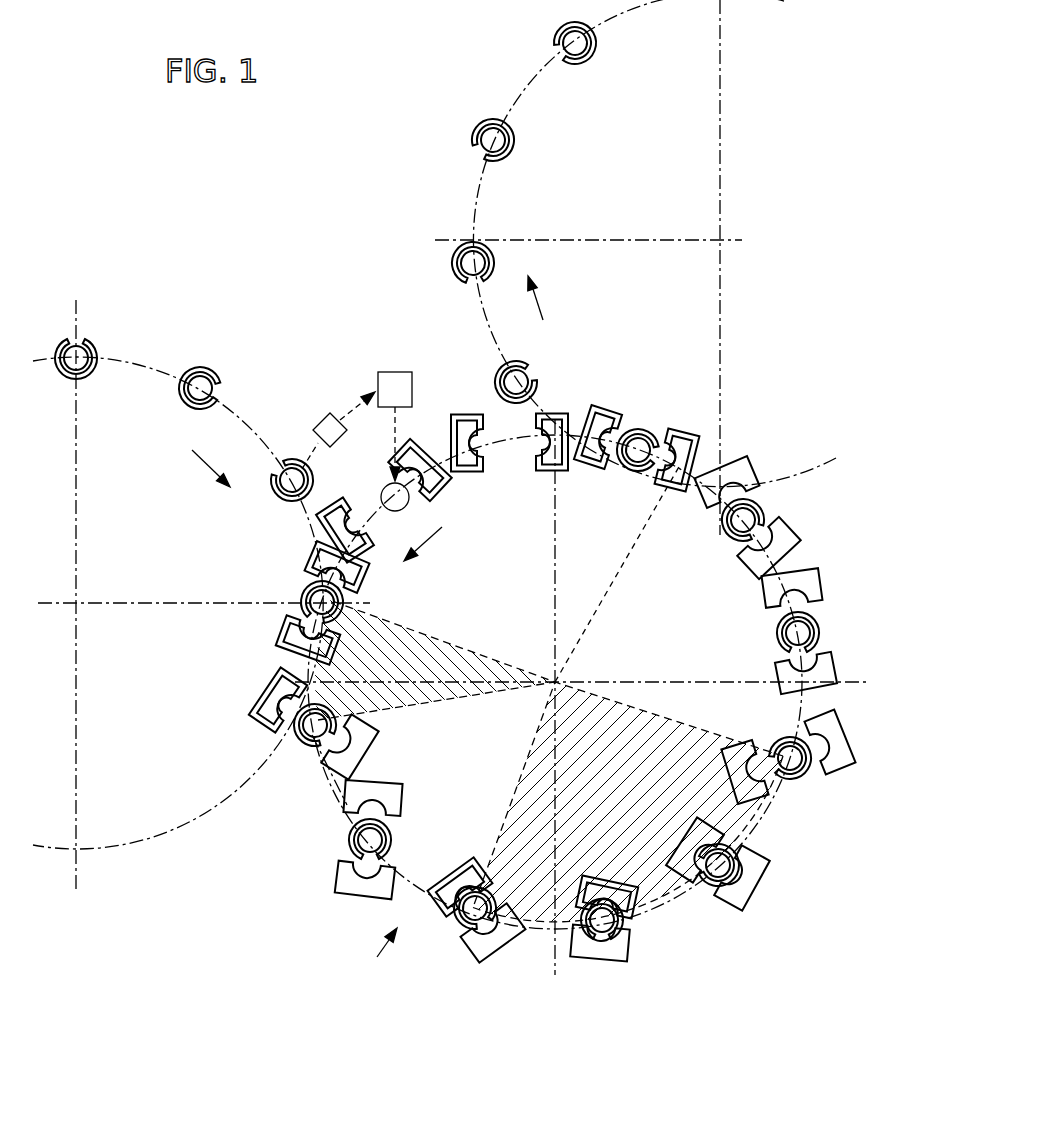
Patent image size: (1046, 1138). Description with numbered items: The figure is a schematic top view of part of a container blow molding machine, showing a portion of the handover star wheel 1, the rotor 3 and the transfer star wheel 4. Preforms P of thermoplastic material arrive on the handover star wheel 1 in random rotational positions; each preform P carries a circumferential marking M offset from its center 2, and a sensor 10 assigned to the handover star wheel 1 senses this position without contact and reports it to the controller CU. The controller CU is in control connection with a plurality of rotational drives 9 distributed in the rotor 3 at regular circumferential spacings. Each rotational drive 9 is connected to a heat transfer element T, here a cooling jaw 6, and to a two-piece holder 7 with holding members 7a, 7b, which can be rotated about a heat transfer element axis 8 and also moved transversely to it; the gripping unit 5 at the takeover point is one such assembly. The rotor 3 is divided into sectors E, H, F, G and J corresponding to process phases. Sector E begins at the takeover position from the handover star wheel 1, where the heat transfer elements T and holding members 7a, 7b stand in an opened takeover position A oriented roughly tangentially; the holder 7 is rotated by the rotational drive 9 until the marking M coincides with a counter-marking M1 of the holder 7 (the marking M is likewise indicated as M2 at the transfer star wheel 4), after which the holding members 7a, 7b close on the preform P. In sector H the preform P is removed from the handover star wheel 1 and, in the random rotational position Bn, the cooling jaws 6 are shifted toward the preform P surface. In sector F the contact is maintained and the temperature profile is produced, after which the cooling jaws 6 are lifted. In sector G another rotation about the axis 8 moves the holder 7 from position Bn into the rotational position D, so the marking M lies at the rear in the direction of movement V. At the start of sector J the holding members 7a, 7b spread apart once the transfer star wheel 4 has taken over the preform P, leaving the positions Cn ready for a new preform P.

The handover star wheel 1 is at (136, 363).
The center 2 is at (437, 476).
The rotor 3 is at (333, 792).
The transfer star wheel 4 is at (470, 194).
The gripper 5 is at (274, 633).
The cooling jaw 6 is at (278, 697).
The holder 7 is at (283, 737).
The holding member 7a is at (350, 818).
The holding member 7b is at (388, 855).
The heat transfer element axis 8 is at (408, 505).
The rotational drive 9 is at (405, 518).
The sensor 10 is at (320, 416).
The controller CU is at (378, 382).
The preform P is at (200, 367).
The circumferential marking M is at (226, 393).
The transfer point M2 is at (472, 286).
The transfer point M' M1 is at (322, 766).
The heat transfer element T is at (372, 826).
The sector E is at (462, 652).
The sector F is at (655, 738).
The direction of rotation V is at (380, 956).
The random rotational position Bn is at (560, 809).
The position Cn is at (467, 947).
The opened takeover position A is at (659, 398).
The rotational position D is at (846, 560).
The sector G is at (716, 692).
The sector H is at (600, 640).
The sector J is at (578, 528).